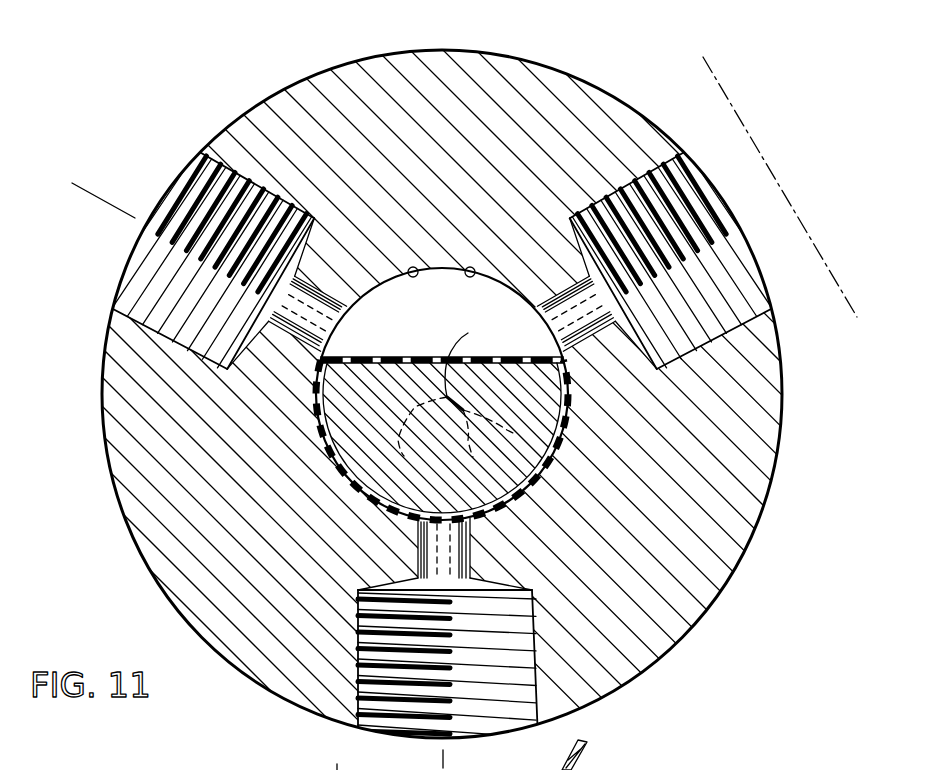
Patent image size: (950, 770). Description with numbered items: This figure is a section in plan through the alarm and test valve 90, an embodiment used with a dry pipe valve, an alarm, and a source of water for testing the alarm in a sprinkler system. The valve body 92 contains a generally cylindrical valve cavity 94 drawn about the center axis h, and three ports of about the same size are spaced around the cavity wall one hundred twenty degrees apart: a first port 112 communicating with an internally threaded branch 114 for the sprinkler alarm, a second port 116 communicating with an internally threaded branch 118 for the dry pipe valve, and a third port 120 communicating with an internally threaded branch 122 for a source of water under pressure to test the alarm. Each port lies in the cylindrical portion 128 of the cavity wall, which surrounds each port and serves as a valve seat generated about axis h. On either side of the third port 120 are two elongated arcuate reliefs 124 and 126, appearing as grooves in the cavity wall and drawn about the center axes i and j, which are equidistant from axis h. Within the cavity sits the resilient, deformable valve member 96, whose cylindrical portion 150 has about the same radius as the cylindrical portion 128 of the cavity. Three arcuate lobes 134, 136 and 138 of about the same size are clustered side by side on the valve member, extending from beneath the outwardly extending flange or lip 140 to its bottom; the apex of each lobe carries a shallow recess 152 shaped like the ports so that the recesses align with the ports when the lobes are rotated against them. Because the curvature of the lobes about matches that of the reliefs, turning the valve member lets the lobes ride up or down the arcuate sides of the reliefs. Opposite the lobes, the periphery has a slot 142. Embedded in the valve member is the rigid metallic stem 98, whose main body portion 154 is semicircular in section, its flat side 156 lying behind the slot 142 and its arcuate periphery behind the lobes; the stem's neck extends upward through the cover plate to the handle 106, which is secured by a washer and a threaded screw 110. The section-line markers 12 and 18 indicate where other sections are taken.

The alarm and test valve 90 is at (583, 68).
The valve body 92 is at (766, 497).
The valve cavity 94 is at (412, 266).
The valve member 96 is at (320, 430).
The stem 98 is at (415, 407).
The handle 106 is at (288, 761).
The threaded screw 110 is at (532, 755).
The first port 112 is at (560, 297).
The internally threaded branch 114 is at (627, 177).
The second port 116 is at (323, 293).
The internally threaded branch 118 is at (200, 187).
The third port 120 is at (462, 558).
The internally threaded branch 122 is at (530, 662).
The arcuate relief 124 is at (562, 462).
The arcuate relief 126 is at (362, 482).
The cylindrical portion of the cavity wall 128 is at (468, 266).
The arcuate lobe 134 is at (345, 486).
The arcuate lobe 136 is at (372, 592).
The arcuate lobe 138 is at (548, 476).
The flange or lip 140 is at (348, 756).
The slot 142 is at (410, 355).
The cylindrical portion of the valve member 150 is at (315, 396).
The shallow recess 152 is at (337, 470).
The main body portion of the stem 154 is at (537, 393).
The flat side 156 is at (505, 360).
The section line 12- 12 is at (123, 135).
The section line 18- 18 is at (667, 92).
The center axis of the cavity h is at (462, 367).
The center axis of relief i is at (488, 437).
The center axis of relief j is at (422, 430).